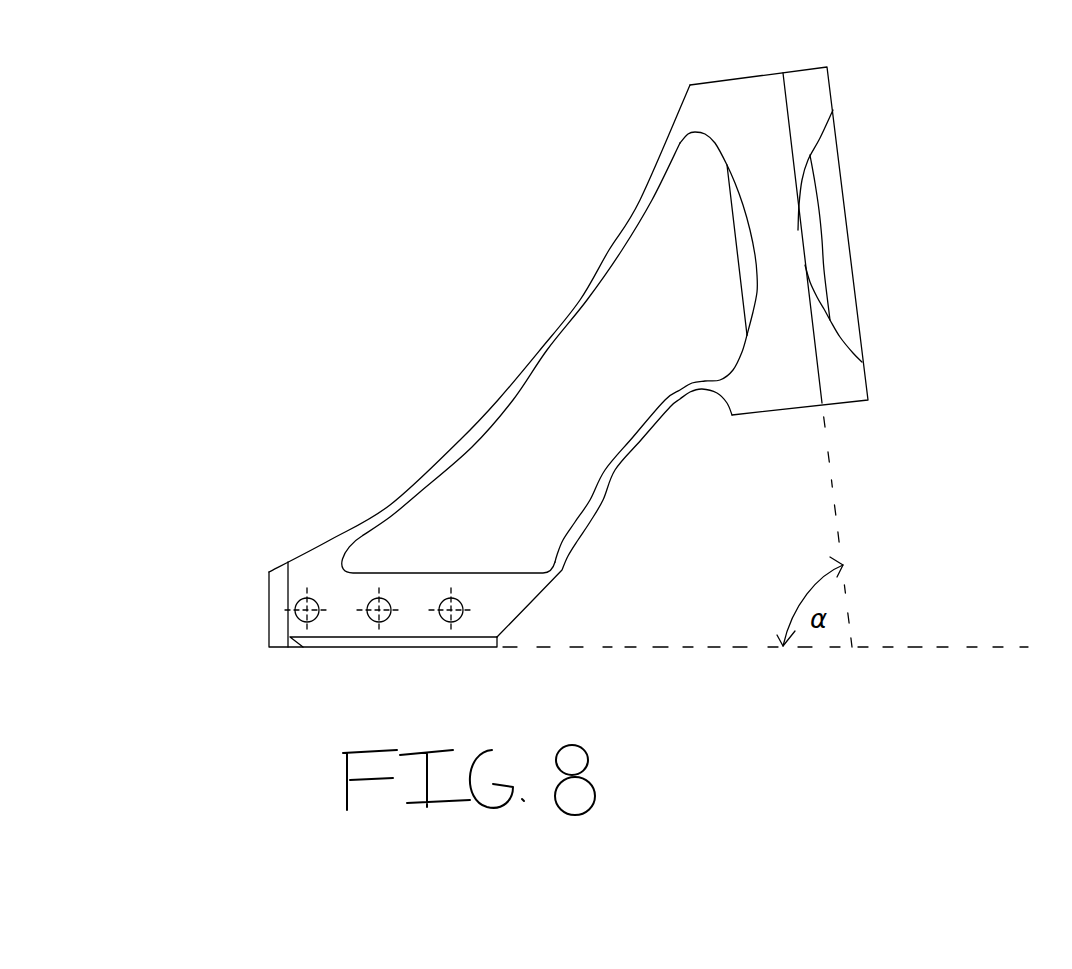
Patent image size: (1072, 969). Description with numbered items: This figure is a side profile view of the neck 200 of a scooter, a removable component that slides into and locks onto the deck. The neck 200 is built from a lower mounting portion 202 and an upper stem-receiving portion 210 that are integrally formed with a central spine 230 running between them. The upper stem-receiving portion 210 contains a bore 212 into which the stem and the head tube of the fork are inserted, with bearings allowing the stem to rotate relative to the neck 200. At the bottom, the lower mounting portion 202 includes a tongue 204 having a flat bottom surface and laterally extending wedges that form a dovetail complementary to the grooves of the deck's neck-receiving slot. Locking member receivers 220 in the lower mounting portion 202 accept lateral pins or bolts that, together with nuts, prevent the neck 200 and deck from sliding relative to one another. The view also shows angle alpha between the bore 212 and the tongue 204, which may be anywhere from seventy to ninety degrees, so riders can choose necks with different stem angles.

The neck 200 is at (380, 213).
The upper stem-receiving portion 210 is at (830, 98).
The bore 212 is at (733, 222).
The central spine 230 is at (495, 403).
The lower mounting portion 202 is at (269, 610).
The tongue 204 is at (350, 638).
The locking member receivers 220 is at (379, 598).